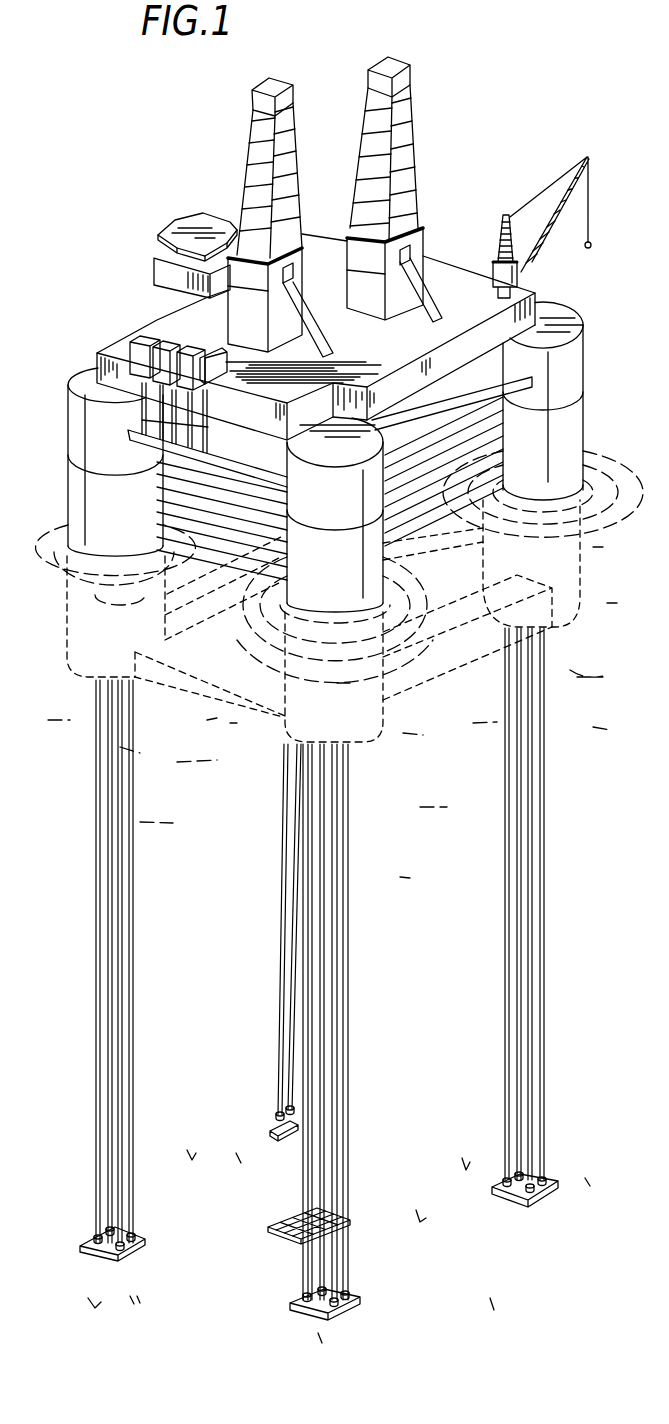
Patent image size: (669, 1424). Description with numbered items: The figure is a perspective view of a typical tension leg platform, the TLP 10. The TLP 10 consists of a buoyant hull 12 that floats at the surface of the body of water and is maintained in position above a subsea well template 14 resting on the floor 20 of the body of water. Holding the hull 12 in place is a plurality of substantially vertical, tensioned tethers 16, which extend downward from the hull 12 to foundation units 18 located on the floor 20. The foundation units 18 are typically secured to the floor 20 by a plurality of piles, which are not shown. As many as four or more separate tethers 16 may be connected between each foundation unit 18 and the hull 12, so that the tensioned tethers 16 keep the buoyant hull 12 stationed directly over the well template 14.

The TLP 10 is at (178, 179).
The buoyant hull 12 is at (600, 365).
The subsea well template 14 is at (276, 1217).
The tethers 16 is at (132, 931).
The foundation units 18 is at (78, 1218).
The floor 20 is at (194, 1293).